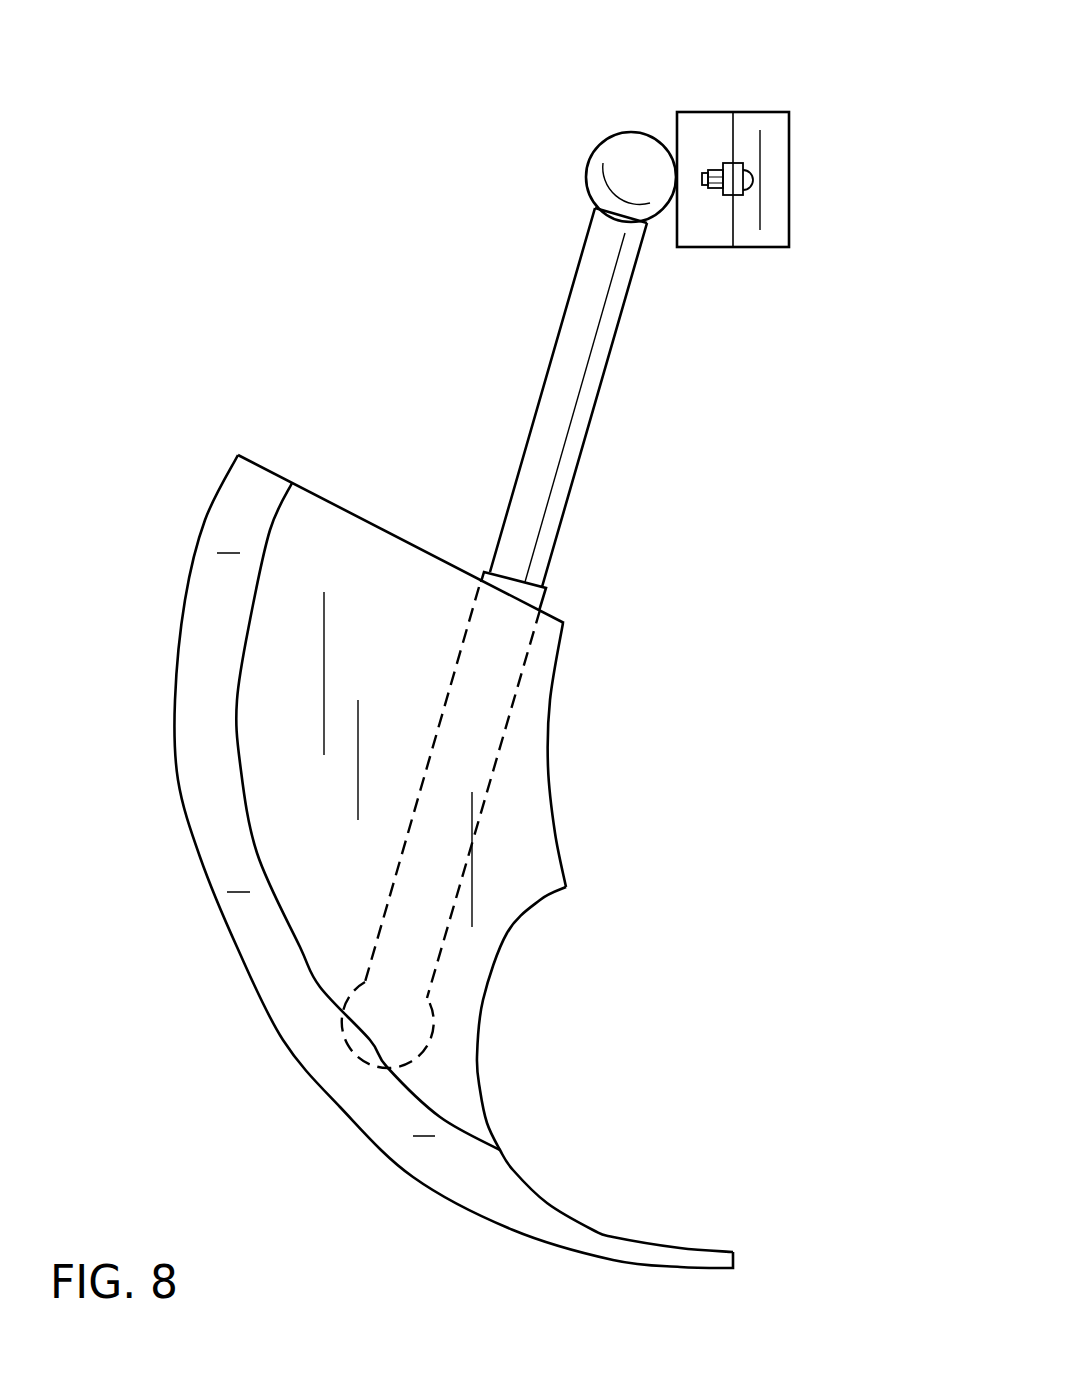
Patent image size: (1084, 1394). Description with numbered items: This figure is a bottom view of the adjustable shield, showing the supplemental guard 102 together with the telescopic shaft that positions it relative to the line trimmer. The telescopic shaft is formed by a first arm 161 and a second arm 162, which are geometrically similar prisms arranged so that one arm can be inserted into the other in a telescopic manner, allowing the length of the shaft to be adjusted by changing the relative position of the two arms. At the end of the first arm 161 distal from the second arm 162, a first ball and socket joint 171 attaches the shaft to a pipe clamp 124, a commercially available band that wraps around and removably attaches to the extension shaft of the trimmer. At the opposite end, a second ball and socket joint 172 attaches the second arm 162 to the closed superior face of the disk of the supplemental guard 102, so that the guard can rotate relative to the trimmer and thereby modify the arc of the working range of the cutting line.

The supplemental guard 102 is at (185, 469).
The pipe clamp 124 is at (779, 173).
The first arm 161 is at (570, 447).
The second arm 162 is at (507, 652).
The first ball and socket joint 171 is at (633, 152).
The second ball and socket joint 172 is at (405, 1030).